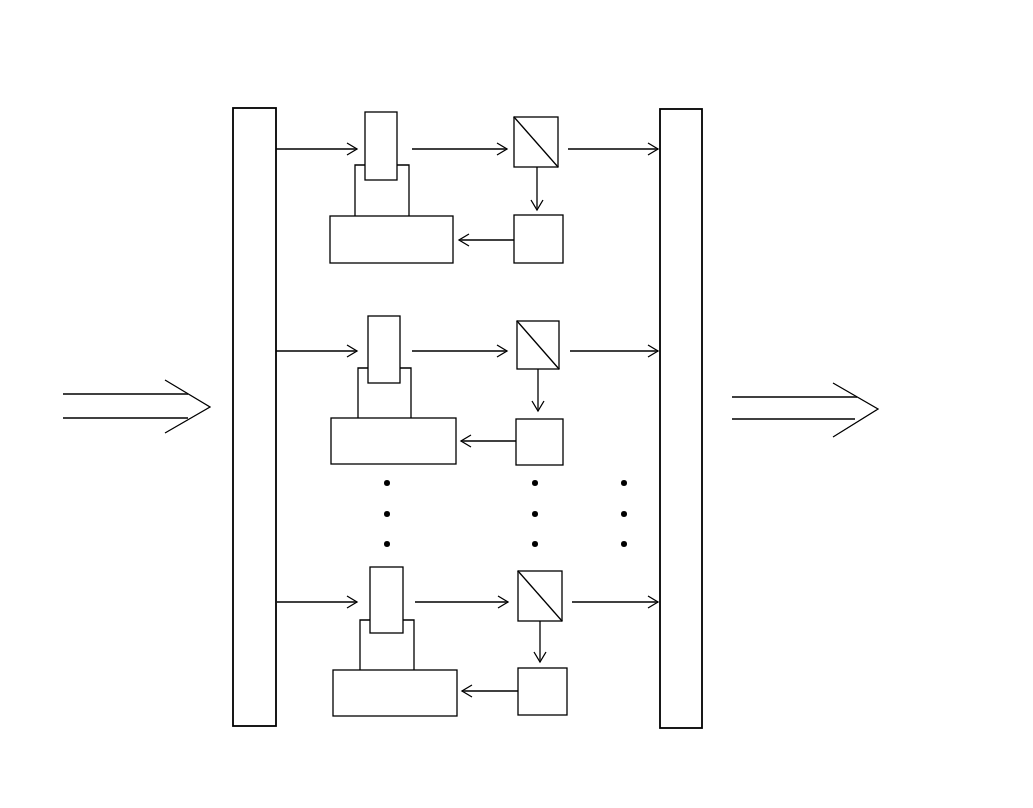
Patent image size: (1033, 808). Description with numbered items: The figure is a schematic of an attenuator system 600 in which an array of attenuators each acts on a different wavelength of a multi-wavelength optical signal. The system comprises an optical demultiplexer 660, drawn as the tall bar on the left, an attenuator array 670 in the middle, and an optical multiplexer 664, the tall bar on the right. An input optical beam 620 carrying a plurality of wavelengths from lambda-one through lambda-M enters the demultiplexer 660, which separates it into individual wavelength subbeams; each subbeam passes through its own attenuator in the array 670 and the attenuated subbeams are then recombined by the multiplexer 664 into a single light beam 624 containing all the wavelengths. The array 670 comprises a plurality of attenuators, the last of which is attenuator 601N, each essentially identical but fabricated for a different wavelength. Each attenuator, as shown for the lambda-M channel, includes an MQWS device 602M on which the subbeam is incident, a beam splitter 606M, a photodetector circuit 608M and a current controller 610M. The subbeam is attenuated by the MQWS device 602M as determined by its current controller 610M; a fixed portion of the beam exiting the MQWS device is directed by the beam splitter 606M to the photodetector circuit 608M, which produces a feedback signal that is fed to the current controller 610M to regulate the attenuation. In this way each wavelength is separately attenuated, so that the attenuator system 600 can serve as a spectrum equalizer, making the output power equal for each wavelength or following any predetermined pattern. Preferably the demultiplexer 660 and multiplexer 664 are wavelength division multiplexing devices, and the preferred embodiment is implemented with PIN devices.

The attenuator system 600 is at (142, 105).
The optical demultiplexer 660 is at (232, 175).
The optical multiplexer 664 is at (702, 157).
The input optical beam 620 is at (100, 420).
The single light beam 624 is at (787, 421).
The attenuator array 670 is at (395, 55).
The attenuator 601N is at (342, 752).
The MQWS device 602M is at (375, 567).
The current controller 610M is at (333, 691).
The beam splitter 606M is at (546, 570).
The photodetector circuit 608M is at (567, 686).